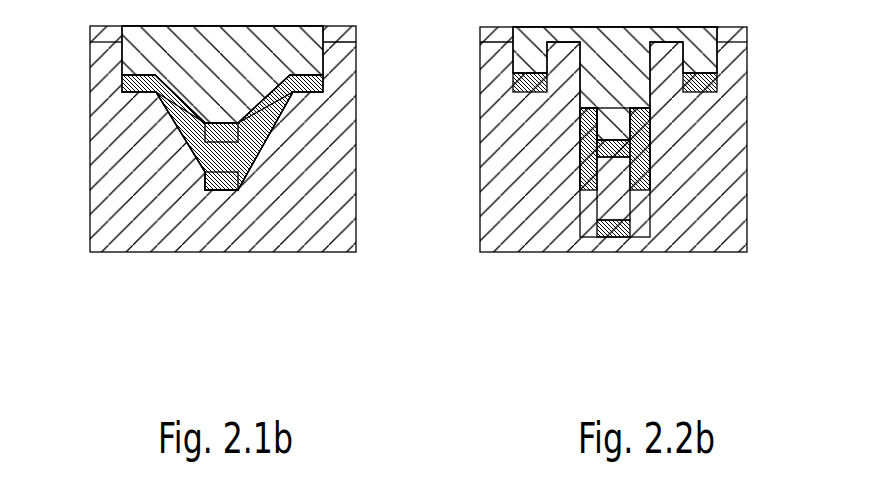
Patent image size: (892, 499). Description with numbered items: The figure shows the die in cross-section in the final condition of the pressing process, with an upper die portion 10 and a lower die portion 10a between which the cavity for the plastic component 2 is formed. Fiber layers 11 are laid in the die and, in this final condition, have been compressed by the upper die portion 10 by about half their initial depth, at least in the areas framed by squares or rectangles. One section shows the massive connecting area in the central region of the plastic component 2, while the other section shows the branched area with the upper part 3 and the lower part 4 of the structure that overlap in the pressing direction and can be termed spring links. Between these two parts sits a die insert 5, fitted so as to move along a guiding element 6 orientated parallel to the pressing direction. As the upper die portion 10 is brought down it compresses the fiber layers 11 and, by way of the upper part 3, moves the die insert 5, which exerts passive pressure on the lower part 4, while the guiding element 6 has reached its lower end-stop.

In FIG. 2.1B, the plastic component 2 is at (150, 111).
In FIG. 2.1B, the upper part of the structure 3 is at (256, 155).
In FIG. 2.2B, the upper part of the structure 3 is at (650, 142).
In FIG. 2.1B, the lower part of the structure 4 is at (207, 183).
In FIG. 2.2B, the lower part of the structure 4 is at (607, 238).
In FIG. 2.2B, the die insert 5 is at (612, 200).
In FIG. 2.2B, the guiding element 6 is at (590, 192).
In FIG. 2.1B, the upper die portion 10 is at (288, 32).
In FIG. 2.2B, the upper die portion 10 is at (523, 37).
In FIG. 2.1B, the lower die portion 10a is at (317, 217).
In FIG. 2.2B, the lower die portion 10a is at (497, 247).
In FIG. 2.1B, the fiber layers 11 is at (257, 157).
In FIG. 2.2B, the fiber layers 11 is at (580, 153).